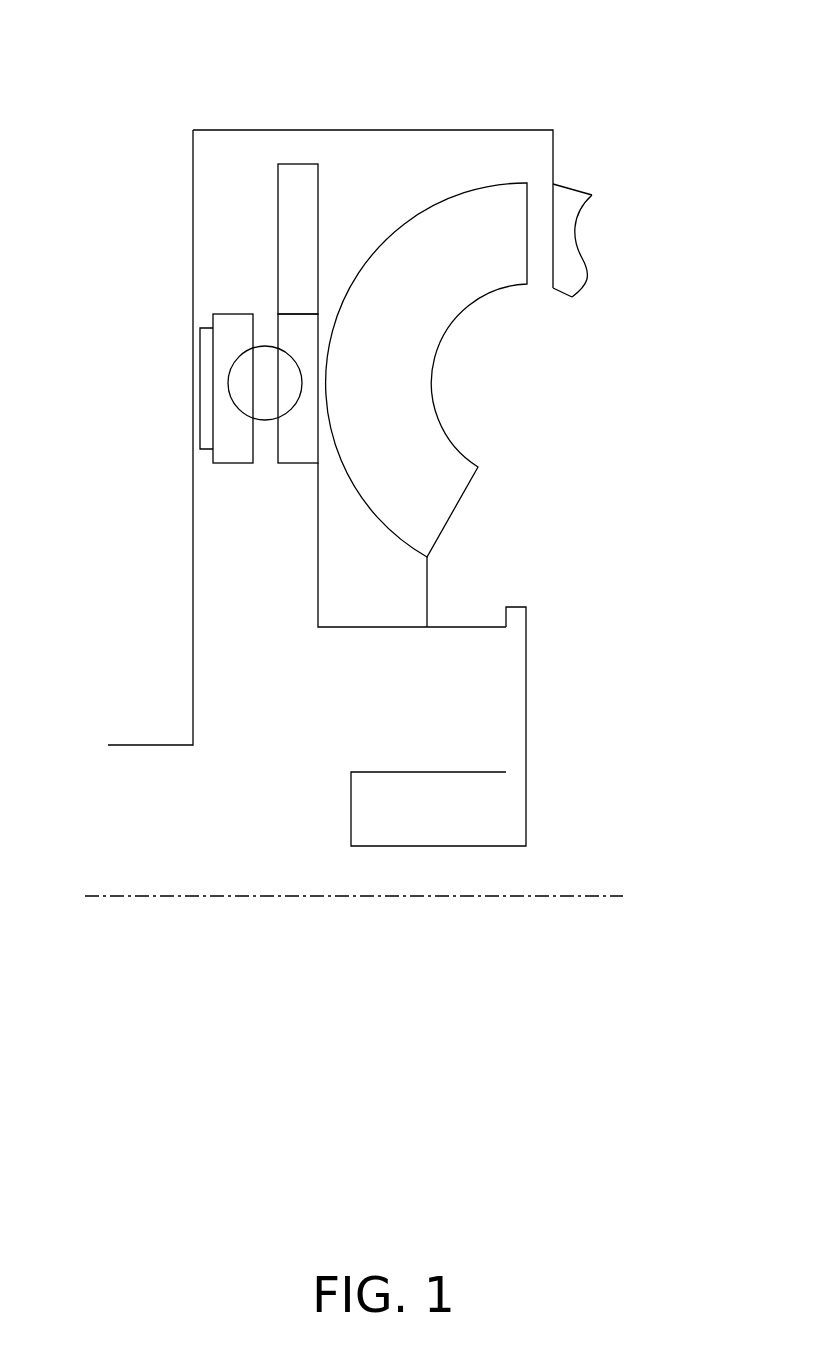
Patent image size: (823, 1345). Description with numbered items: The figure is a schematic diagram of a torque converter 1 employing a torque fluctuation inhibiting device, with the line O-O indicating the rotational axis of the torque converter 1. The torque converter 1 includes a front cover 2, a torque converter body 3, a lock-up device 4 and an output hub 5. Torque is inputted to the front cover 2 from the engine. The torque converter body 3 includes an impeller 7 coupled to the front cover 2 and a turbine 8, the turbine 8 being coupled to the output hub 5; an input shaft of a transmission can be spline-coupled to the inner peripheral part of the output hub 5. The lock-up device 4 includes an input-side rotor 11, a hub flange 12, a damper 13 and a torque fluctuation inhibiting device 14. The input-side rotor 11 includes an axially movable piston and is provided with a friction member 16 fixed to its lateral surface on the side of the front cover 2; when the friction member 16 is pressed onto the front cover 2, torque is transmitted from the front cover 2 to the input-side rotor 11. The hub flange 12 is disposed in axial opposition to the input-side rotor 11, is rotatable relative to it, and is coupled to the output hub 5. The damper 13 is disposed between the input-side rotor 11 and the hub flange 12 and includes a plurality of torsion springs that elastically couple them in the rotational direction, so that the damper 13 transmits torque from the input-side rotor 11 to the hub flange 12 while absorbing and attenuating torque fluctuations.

The torque converter 1 is at (598, 99).
The front cover 2 is at (193, 168).
The torque converter body 3 is at (621, 184).
The lock-up device 4 is at (235, 515).
The output hub 5 is at (526, 698).
The impeller 7 is at (572, 260).
The turbine 8 is at (420, 360).
The input-side rotor 11 is at (234, 325).
The hub flange 12 is at (292, 450).
The damper 13 is at (265, 425).
The torque fluctuation inhibiting device 14 is at (272, 221).
The friction member 16 is at (206, 392).